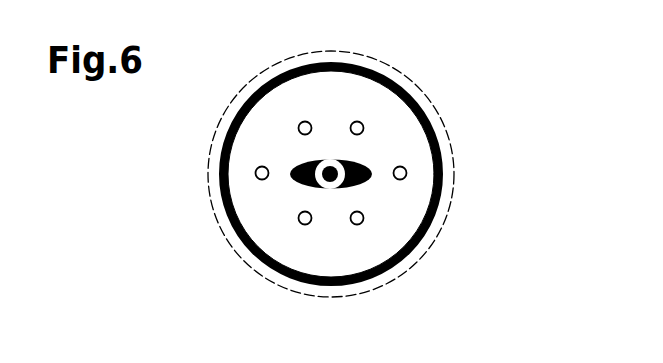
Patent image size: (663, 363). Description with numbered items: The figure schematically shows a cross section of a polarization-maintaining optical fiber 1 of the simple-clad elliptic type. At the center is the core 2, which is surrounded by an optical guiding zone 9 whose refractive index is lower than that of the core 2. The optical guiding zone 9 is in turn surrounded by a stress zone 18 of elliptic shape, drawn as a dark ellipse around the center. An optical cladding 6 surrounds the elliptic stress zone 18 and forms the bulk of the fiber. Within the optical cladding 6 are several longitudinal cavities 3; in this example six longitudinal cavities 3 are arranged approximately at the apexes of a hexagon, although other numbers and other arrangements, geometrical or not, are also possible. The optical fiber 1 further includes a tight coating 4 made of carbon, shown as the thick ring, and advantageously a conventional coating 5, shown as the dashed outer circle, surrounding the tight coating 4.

The optical fiber 1 is at (140, 145).
The core 2 is at (329, 160).
The longitudinal cavities 3 is at (300, 123).
The tight coating 4 is at (223, 213).
The conventional coating 5 is at (235, 252).
The optical cladding 6 is at (397, 115).
The optical guiding zone 9 is at (333, 188).
The stress zone 18 is at (363, 183).